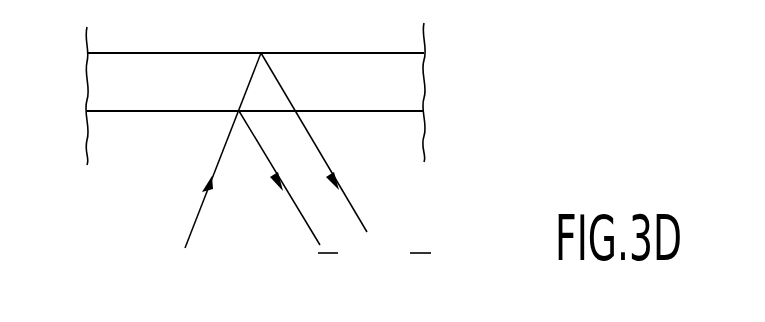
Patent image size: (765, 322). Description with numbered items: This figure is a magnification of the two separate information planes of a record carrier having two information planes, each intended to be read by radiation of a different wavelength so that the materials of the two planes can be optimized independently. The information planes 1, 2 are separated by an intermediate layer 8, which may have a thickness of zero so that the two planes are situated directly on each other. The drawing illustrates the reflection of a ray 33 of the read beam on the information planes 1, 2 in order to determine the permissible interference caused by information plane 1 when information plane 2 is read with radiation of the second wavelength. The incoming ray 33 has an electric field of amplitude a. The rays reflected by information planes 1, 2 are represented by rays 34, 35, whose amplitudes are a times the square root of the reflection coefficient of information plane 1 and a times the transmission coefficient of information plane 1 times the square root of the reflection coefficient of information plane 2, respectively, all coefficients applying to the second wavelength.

The information plane 1 is at (424, 110).
The information plane 2 is at (424, 52).
The intermediate layer 8 is at (405, 80).
The ray 33 is at (198, 213).
The ray 34 is at (299, 213).
The ray 35 is at (357, 213).